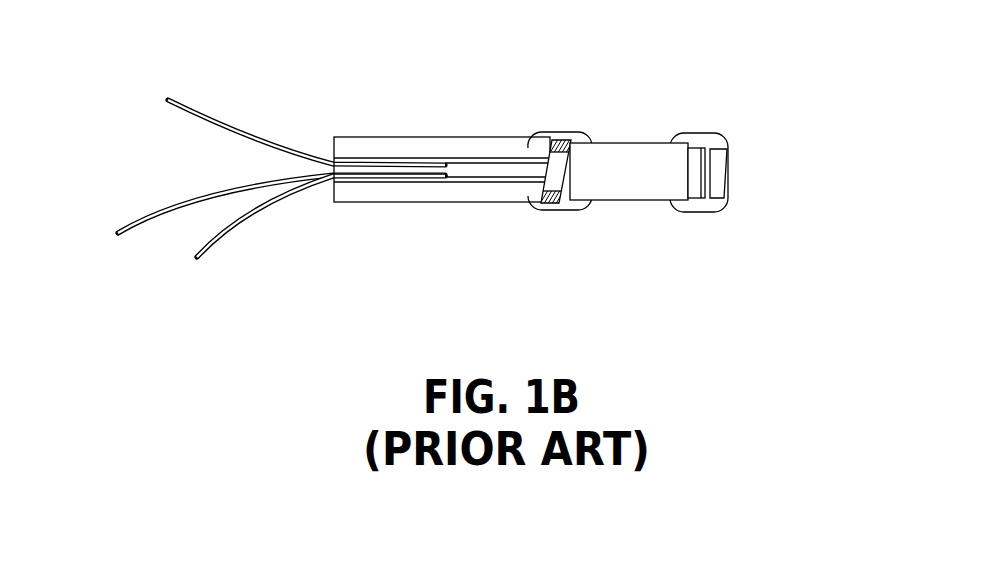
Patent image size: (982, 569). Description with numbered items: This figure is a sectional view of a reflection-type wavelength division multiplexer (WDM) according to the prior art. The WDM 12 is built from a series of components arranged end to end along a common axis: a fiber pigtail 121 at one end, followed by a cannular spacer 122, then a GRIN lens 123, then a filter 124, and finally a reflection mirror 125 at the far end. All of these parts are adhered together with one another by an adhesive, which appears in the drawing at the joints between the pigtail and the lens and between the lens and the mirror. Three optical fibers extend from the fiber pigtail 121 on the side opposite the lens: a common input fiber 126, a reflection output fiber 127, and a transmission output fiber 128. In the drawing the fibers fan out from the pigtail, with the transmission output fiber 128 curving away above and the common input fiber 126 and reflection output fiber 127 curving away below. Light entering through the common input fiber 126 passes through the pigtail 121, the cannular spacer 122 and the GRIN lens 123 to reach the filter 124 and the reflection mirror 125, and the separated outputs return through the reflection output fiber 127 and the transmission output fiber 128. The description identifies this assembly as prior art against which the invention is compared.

The WDM 12 is at (705, 37).
The fiber pigtail 121 is at (388, 145).
The cannular spacer 122 is at (562, 145).
The GRIN lens 123 is at (637, 157).
The filter 124 is at (698, 157).
The reflection mirror 125 is at (717, 167).
The common input fiber 126 is at (160, 207).
The reflection output fiber 127 is at (220, 227).
The transmission output fiber 128 is at (212, 127).